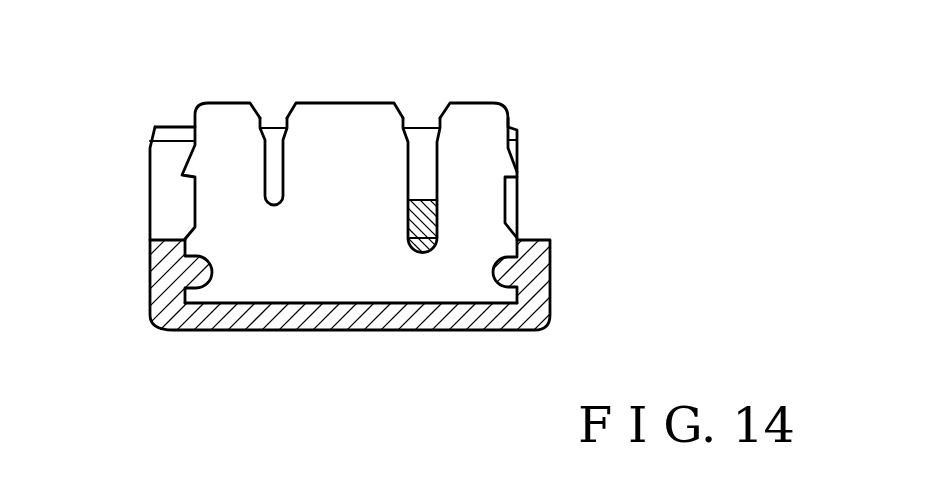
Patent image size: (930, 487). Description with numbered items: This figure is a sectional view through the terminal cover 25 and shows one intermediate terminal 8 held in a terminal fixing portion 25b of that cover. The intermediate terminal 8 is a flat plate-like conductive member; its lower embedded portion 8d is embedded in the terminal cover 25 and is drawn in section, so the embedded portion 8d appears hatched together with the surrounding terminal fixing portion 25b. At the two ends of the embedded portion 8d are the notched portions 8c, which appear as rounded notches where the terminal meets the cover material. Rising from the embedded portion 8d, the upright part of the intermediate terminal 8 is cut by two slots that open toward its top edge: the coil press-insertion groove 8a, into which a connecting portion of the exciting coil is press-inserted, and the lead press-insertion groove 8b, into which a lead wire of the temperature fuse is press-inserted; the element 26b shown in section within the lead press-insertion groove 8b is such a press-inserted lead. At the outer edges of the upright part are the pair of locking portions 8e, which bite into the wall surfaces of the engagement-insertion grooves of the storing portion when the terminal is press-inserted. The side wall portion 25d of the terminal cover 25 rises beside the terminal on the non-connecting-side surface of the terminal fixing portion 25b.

The intermediate terminal 8 is at (493, 103).
The coil press-insertion groove 8a is at (278, 165).
The lead press-insertion groove 8b is at (432, 162).
The notched portion 8c is at (200, 278).
The embedded portion 8d is at (368, 280).
The locking portion 8e is at (188, 172).
The terminal cover 25 is at (542, 257).
The terminal fixing portion 25b is at (160, 262).
The side wall portion 25d is at (175, 133).
The contact piece 26b is at (407, 212).